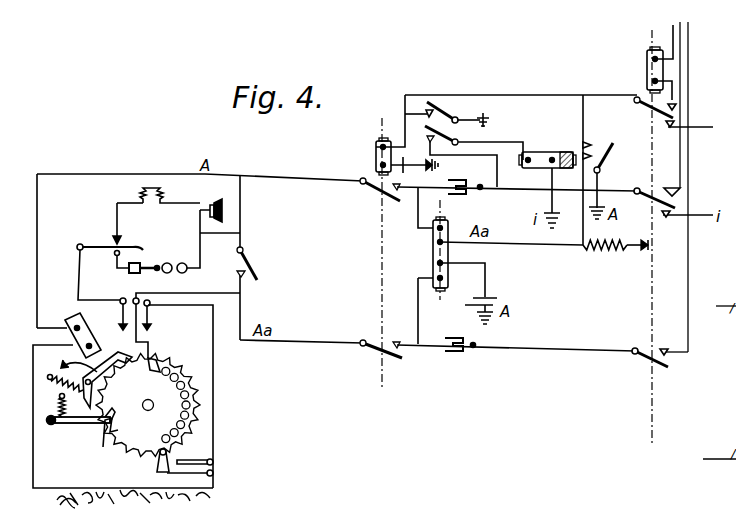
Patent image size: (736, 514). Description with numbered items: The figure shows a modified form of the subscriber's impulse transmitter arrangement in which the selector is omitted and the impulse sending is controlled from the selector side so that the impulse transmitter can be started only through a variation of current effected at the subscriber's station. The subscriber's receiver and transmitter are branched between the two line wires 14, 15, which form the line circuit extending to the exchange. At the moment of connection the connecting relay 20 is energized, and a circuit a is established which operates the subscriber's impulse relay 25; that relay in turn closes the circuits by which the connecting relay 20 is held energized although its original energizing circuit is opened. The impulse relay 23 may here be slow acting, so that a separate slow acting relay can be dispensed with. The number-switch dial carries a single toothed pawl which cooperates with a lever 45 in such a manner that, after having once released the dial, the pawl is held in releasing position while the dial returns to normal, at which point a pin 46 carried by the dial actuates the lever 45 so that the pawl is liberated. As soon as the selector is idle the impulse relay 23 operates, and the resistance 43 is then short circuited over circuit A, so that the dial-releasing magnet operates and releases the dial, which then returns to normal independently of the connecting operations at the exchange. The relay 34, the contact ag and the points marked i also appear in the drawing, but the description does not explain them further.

The line wire 14 is at (352, 189).
The line wire 15 is at (346, 340).
The connecting relay 20 is at (376, 157).
The impulse relay 23 is at (543, 153).
The subscriber's impulse relay 25 is at (433, 260).
The relay 34 is at (647, 70).
The resistance 43 is at (605, 258).
The lever 45 is at (68, 424).
The pin 46 is at (103, 440).
The circuit a is at (247, 243).
The switch i is at (436, 135).
The circuit A is at (601, 180).
The contact ag is at (641, 256).